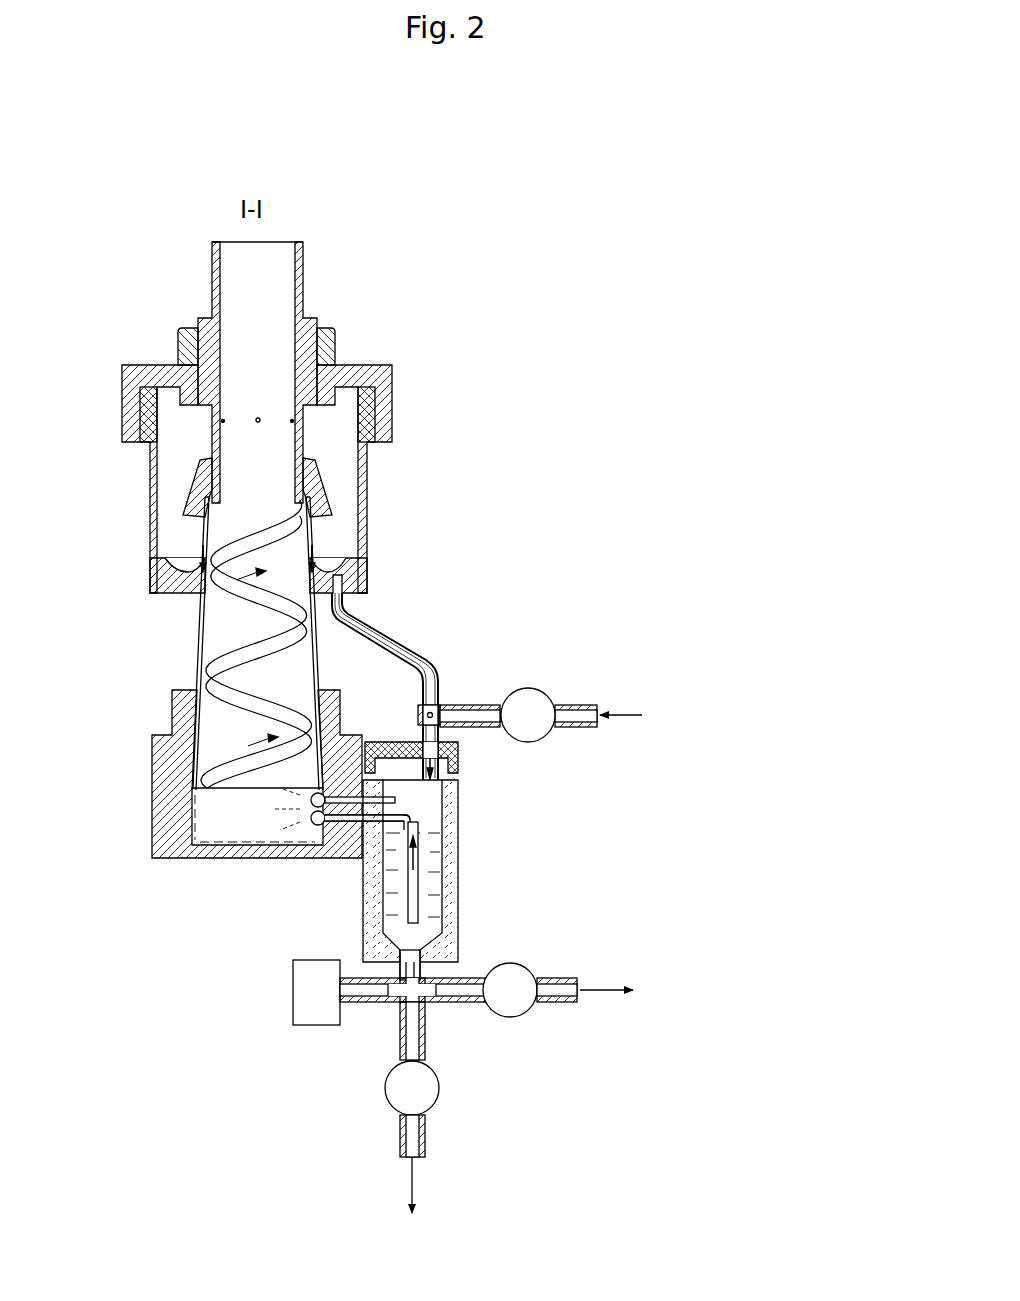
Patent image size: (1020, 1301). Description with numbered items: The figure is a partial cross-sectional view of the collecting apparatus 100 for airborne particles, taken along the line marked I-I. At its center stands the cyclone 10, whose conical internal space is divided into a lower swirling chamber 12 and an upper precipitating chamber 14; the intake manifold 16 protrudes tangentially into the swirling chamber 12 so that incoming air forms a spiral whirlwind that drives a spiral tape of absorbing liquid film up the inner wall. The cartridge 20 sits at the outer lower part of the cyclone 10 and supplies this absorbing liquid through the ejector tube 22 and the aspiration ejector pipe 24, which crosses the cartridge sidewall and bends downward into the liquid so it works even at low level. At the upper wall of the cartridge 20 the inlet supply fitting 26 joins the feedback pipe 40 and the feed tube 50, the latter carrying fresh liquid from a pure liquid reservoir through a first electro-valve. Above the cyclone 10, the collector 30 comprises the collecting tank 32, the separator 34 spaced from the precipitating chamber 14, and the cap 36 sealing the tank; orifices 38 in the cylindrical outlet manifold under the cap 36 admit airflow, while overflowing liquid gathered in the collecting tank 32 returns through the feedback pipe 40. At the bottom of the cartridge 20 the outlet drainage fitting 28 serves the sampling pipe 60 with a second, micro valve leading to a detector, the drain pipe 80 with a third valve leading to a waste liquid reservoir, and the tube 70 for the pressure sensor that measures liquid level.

The collecting apparatus 100 is at (79, 283).
The cyclone 10 is at (70, 793).
The swirling chamber 12 is at (165, 818).
The precipitating chamber 14 is at (152, 765).
The intake manifold 16 is at (320, 826).
The cartridge 20 is at (455, 825).
The ejector tube 22 is at (440, 798).
The aspiration ejector pipe 24 is at (425, 893).
The inlet supply fitting 26 is at (445, 700).
The outlet drainage fitting 28 is at (427, 980).
The collector 30 is at (540, 318).
The collecting tank 32 is at (302, 473).
The separator 34 is at (393, 440).
The cap 36 is at (380, 396).
The orifices 38 is at (262, 418).
The feedback pipe 40 is at (394, 641).
The feed tube 50 is at (480, 705).
The sampling pipe 60 is at (462, 1003).
The tube 70 is at (367, 1003).
The drain pipe 80 is at (427, 1047).